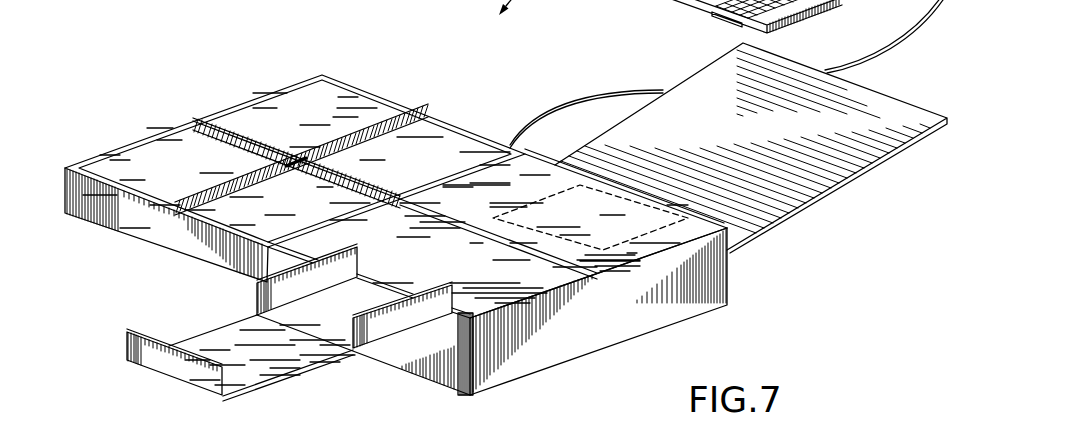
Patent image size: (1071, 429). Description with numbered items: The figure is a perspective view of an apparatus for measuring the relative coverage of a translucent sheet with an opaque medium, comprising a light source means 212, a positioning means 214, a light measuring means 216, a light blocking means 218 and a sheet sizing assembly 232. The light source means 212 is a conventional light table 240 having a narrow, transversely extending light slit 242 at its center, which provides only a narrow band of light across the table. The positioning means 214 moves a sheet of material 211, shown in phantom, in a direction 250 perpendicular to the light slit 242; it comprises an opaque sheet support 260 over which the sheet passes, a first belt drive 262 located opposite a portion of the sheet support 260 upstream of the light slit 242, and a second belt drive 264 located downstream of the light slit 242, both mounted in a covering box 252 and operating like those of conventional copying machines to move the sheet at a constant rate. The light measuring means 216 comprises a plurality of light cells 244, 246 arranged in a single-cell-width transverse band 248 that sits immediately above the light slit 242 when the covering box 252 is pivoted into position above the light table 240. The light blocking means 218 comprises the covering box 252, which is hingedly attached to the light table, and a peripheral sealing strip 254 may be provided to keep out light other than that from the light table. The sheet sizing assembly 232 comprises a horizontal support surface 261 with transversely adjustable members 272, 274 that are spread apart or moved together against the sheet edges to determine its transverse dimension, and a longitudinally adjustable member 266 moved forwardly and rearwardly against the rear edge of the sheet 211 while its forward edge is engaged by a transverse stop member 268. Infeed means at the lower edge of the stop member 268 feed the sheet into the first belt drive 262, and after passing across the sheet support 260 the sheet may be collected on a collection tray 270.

The sheet of material 211 is at (580, 184).
The light source means 212 is at (748, 272).
The positioning means 214 is at (534, 155).
The light measuring means 216 is at (408, 126).
The light blocking means 218 is at (184, 252).
The sheet sizing assembly 232 is at (165, 387).
The light table 240 is at (667, 306).
The light slit 242 is at (588, 277).
The light cell 244 is at (212, 132).
The light cell 246 is at (216, 132).
The transverse band 248 is at (226, 131).
The direction of sheet movement 250 is at (416, 260).
The covering box 252 is at (88, 226).
The peripheral sealing strip 254 is at (98, 158).
The sheet support 260 is at (542, 188).
The horizontal support surface 261 is at (283, 358).
The first belt drive 262 is at (230, 187).
The second belt drive 264 is at (338, 128).
The longitudinally adjustable member 266 is at (138, 348).
The transverse stop member 268 is at (452, 297).
The collection tray 270 is at (795, 194).
The transversely adjustable member 272 is at (254, 285).
The transversely adjustable member 274 is at (378, 320).